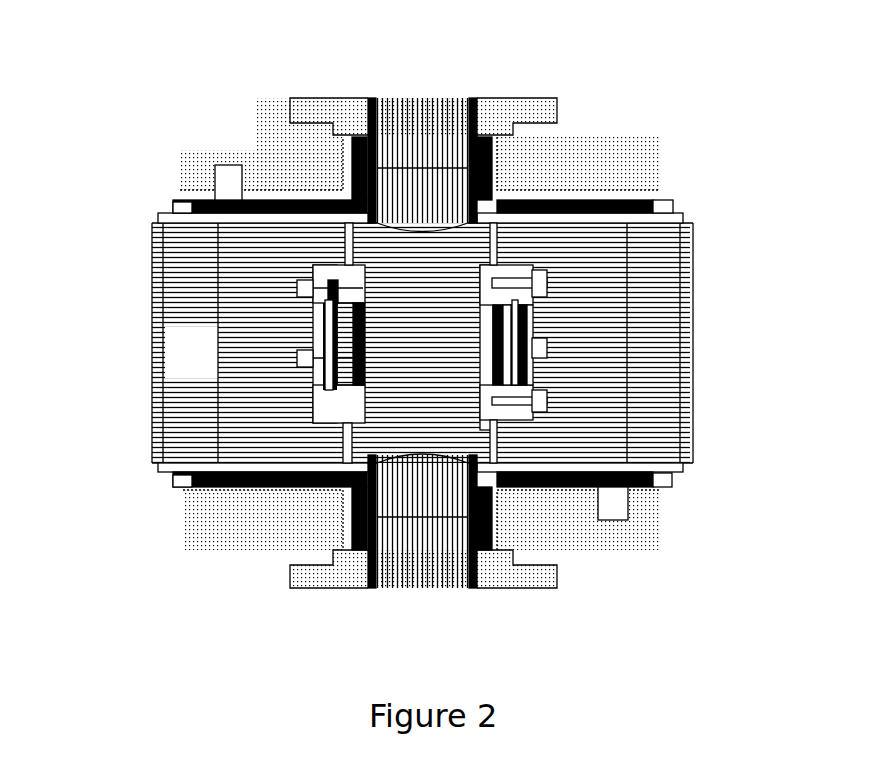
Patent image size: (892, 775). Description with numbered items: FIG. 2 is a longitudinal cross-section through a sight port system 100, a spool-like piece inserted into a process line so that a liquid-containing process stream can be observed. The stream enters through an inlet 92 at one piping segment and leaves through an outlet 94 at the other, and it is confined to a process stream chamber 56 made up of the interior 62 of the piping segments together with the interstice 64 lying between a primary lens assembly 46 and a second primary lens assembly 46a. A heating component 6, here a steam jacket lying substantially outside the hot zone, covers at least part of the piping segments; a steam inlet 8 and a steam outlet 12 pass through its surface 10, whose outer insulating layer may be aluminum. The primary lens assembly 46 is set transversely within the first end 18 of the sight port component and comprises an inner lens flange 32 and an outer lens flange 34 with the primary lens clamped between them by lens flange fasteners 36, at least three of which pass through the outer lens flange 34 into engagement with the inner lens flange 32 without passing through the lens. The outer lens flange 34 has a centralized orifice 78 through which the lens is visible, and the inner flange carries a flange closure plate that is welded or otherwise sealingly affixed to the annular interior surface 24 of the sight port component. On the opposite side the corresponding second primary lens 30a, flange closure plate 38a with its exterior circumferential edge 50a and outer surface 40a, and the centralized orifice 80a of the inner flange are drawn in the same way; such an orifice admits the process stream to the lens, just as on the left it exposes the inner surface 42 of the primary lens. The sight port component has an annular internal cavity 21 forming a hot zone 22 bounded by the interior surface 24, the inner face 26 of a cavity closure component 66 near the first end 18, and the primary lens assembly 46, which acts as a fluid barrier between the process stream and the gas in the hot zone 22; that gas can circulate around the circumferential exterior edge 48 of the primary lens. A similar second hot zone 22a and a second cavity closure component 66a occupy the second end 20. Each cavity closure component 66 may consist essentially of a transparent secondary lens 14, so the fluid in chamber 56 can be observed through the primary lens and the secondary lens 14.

The sight port system 100 is at (626, 78).
The inlet 92 is at (413, 97).
The interior of piping segments 62 is at (437, 146).
The first end 18 is at (160, 212).
The surface of steam jacket 10 is at (197, 190).
The steam inlet 8 is at (218, 165).
The heating component 6 is at (249, 202).
The outer lens flange 34 is at (319, 270).
The inner lens flange 32 is at (349, 272).
The annular interior surface 24 is at (237, 222).
The lens flange fasteners 36 is at (300, 283).
The inner face 26 is at (160, 341).
The secondary lens 14 is at (158, 395).
The centralized orifice 78 is at (322, 377).
The cavity closure component 66 is at (160, 465).
The internal cavity 21 is at (196, 468).
The primary lens assembly 46 is at (293, 415).
The circumferential exterior edge 48 is at (333, 395).
The inner surface of primary lens 42 is at (360, 355).
The hot zone 22 is at (275, 359).
The interstice 64 is at (437, 359).
The second hot zone 22a is at (607, 359).
The exterior circumferential edge of second flange closure plate 50a is at (490, 321).
The outer surface of second flange closure plate 40a is at (562, 265).
The centralized orifice of second inner lens flange 80a is at (492, 223).
The second flange closure plate 38a is at (515, 223).
The second primary lens assembly 46a is at (623, 220).
The second end 20 is at (683, 213).
The second cavity closure component 66a is at (687, 465).
The steam outlet 12 is at (615, 520).
The second primary lens 30a is at (522, 392).
The outlet 94 is at (438, 588).
The process stream chamber 56 is at (430, 445).